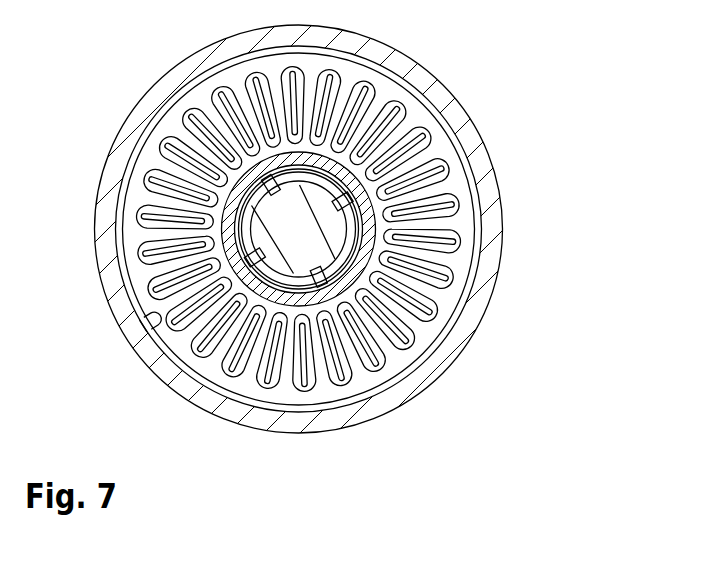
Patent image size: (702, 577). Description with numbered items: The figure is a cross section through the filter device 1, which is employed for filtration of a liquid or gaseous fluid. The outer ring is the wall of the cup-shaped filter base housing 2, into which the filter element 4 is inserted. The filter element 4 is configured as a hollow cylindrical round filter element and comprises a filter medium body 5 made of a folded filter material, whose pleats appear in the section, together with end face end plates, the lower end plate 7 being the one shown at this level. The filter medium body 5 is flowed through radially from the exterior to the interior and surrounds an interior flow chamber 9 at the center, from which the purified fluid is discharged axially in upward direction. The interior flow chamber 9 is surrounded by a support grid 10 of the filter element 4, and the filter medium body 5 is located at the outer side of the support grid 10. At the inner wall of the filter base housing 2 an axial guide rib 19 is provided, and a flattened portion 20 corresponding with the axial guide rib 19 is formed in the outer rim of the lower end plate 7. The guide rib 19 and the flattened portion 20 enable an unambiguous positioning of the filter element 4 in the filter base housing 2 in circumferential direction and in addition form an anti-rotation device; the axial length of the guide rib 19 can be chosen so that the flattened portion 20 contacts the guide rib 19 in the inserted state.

The filter device 1 is at (351, 236).
The filter base housing 2 is at (378, 52).
The filter element 4 is at (440, 140).
The filter medium body 5 is at (461, 203).
The lower end plate 7 is at (205, 368).
The interior flow chamber 9 is at (334, 239).
The support grid 10 is at (358, 265).
The axial guide rib 19 is at (150, 320).
The flattened portion 20 is at (153, 335).